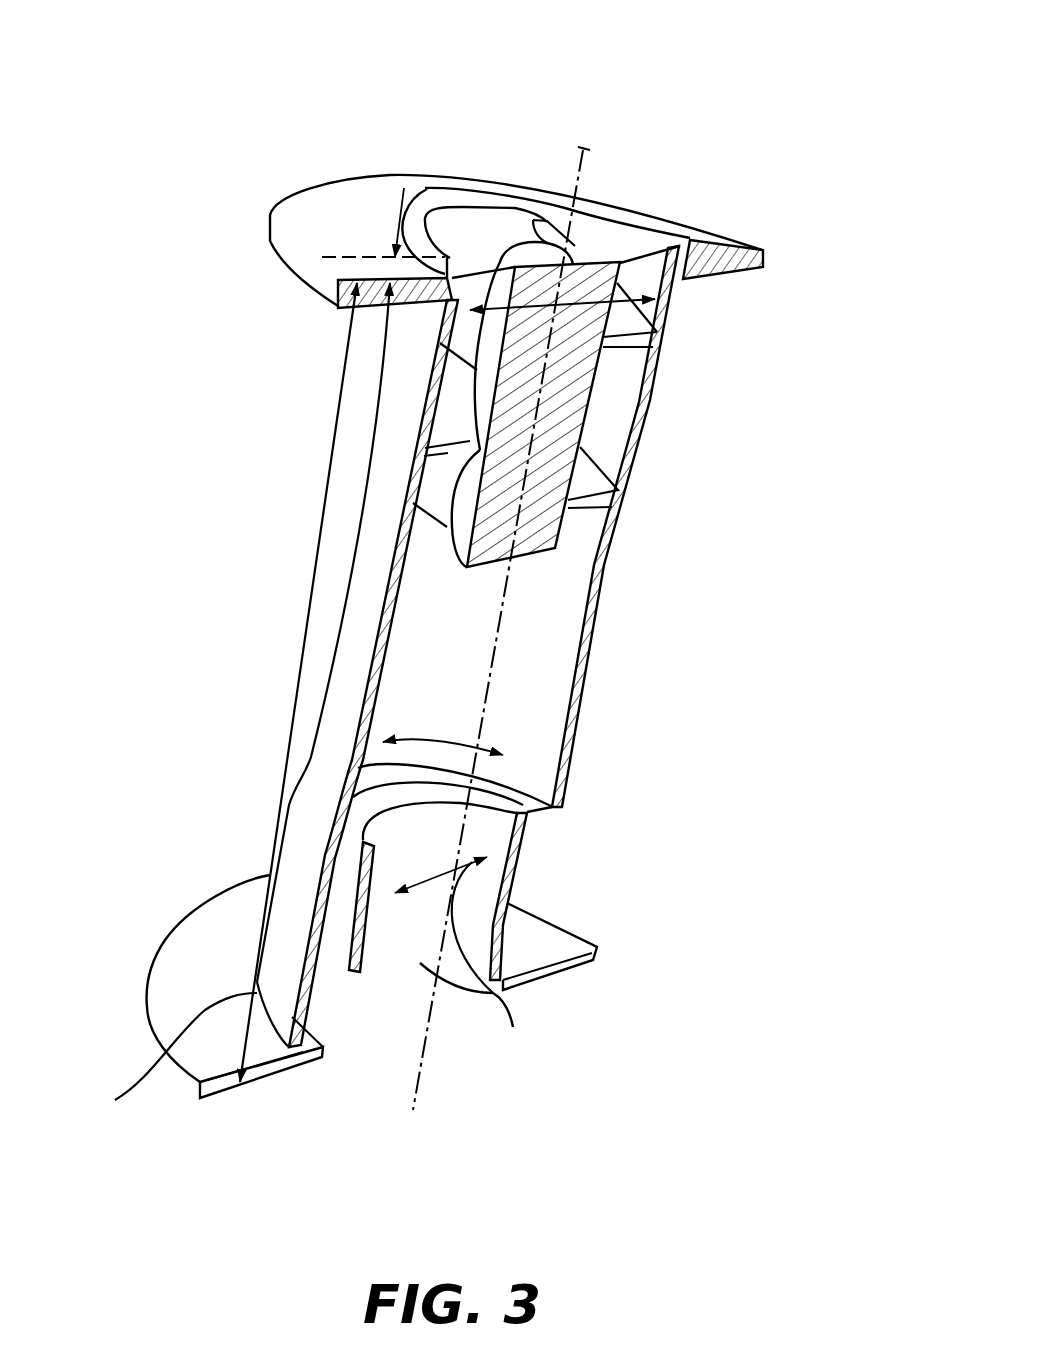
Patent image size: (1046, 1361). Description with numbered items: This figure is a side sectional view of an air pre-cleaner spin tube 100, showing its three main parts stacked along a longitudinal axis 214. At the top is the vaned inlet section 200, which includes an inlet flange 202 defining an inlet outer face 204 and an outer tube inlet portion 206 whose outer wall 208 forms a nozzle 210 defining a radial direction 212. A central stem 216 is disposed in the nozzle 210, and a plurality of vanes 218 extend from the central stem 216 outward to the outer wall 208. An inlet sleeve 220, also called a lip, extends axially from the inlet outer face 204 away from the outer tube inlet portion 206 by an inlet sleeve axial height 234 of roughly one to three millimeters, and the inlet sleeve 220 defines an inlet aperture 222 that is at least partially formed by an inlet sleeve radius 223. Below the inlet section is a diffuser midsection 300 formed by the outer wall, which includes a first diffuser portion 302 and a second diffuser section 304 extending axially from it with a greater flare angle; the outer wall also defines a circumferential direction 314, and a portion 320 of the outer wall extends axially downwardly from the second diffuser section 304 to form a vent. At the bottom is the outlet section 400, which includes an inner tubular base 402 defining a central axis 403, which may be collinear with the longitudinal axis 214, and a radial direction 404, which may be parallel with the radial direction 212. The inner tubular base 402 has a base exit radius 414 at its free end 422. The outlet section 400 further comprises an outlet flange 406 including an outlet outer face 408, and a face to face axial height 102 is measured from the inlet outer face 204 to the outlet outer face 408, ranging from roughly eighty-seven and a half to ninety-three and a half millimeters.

The air pre-cleaner spin tube 100 is at (590, 56).
The face to face axial height 102 is at (166, 1055).
The vaned inlet section 200 is at (672, 345).
The inlet flange 202 is at (712, 246).
The inlet outer face 204 is at (370, 231).
The outer tube inlet portion 206 is at (410, 368).
The outer wall 208 is at (423, 440).
The nozzle 210 is at (612, 405).
The radial direction 212 is at (657, 300).
The longitudinal axis 214 is at (583, 152).
The central stem 216 is at (540, 505).
The vanes 218 is at (547, 222).
The inlet sleeve 220 is at (428, 188).
The inlet aperture 222 is at (640, 240).
The inlet sleeve radius 223 is at (470, 200).
The inlet sleeve axial height 234 is at (386, 315).
The diffuser midsection 300 is at (595, 637).
The first diffuser portion 302 is at (600, 600).
The second diffuser section 304 is at (565, 790).
The circumferential direction 314 is at (410, 738).
The portion of the outer wall 320 is at (283, 1018).
The outlet section 400 is at (262, 946).
The inner tubular base 402 is at (520, 852).
The central axis 403 is at (438, 1080).
The radial direction 404 is at (500, 997).
The outlet flange 406 is at (600, 947).
The outlet outer face 408 is at (258, 1084).
The base exit radius 414 is at (425, 805).
The free end 422 is at (345, 815).